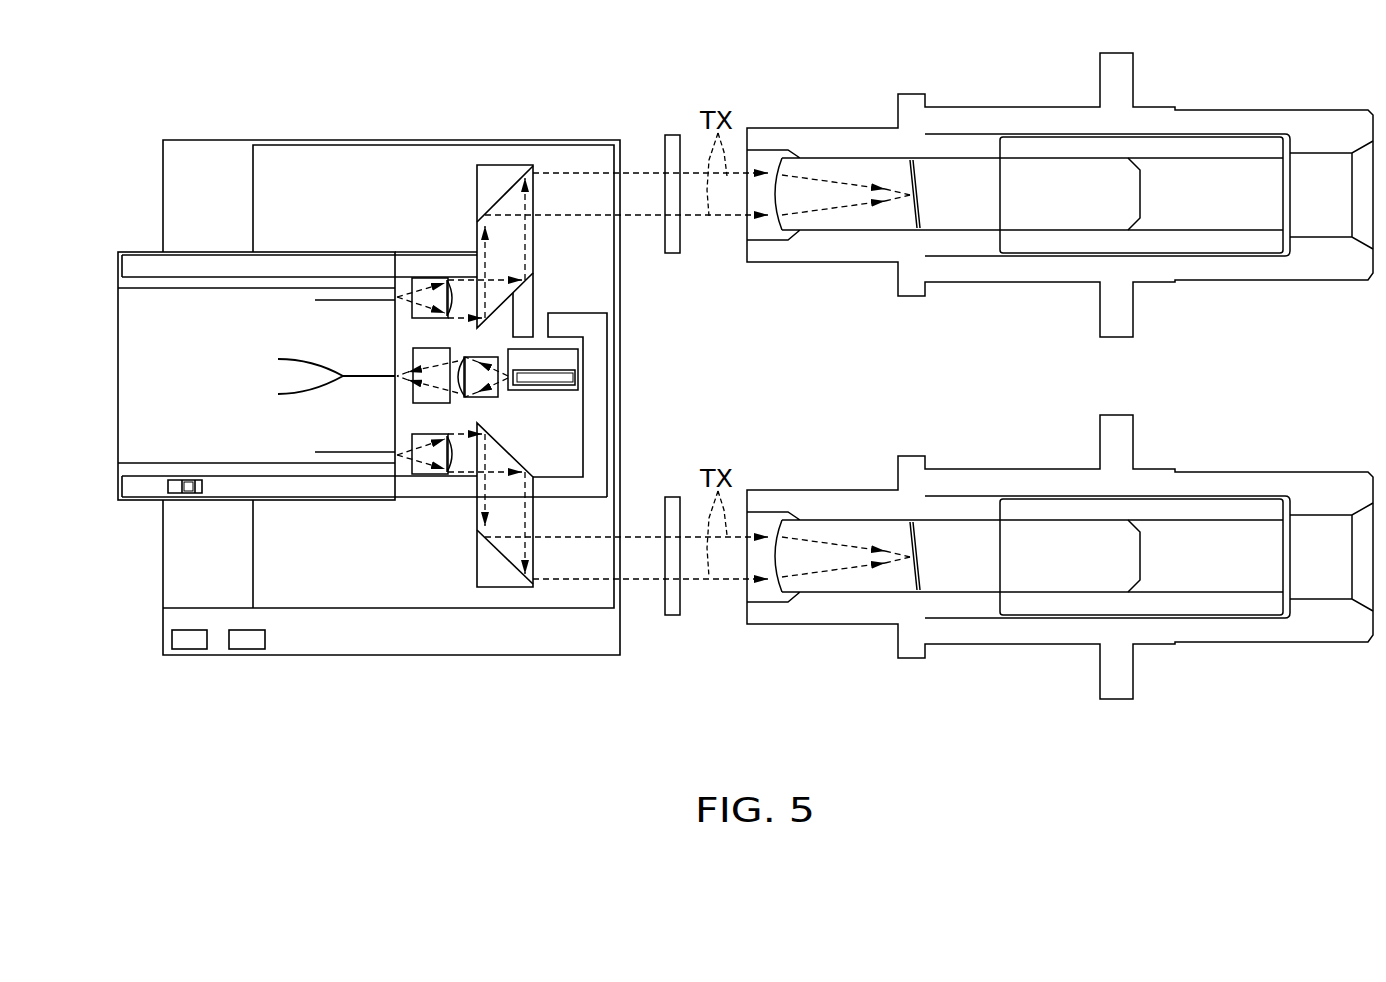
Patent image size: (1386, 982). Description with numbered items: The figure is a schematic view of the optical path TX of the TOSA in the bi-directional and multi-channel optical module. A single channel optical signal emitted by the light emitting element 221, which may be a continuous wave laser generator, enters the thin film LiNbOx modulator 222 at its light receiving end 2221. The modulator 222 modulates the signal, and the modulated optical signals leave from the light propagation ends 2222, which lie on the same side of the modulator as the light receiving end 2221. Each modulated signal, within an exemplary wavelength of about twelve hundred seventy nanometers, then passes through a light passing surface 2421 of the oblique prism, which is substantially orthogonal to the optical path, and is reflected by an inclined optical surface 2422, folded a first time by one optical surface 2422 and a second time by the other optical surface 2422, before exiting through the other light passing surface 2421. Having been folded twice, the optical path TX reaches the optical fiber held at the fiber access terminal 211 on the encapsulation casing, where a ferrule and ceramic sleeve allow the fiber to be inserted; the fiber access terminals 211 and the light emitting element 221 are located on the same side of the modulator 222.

The fiber access terminal 211 is at (672, 135).
The light emitting element 221 is at (580, 377).
The thin film LiNbOx modulator 222 is at (216, 359).
The light receiving end 2221 is at (393, 374).
The light propagation end 2222 is at (398, 298).
The light passing surface 2421 is at (477, 302).
The optical surface 2422 is at (503, 192).